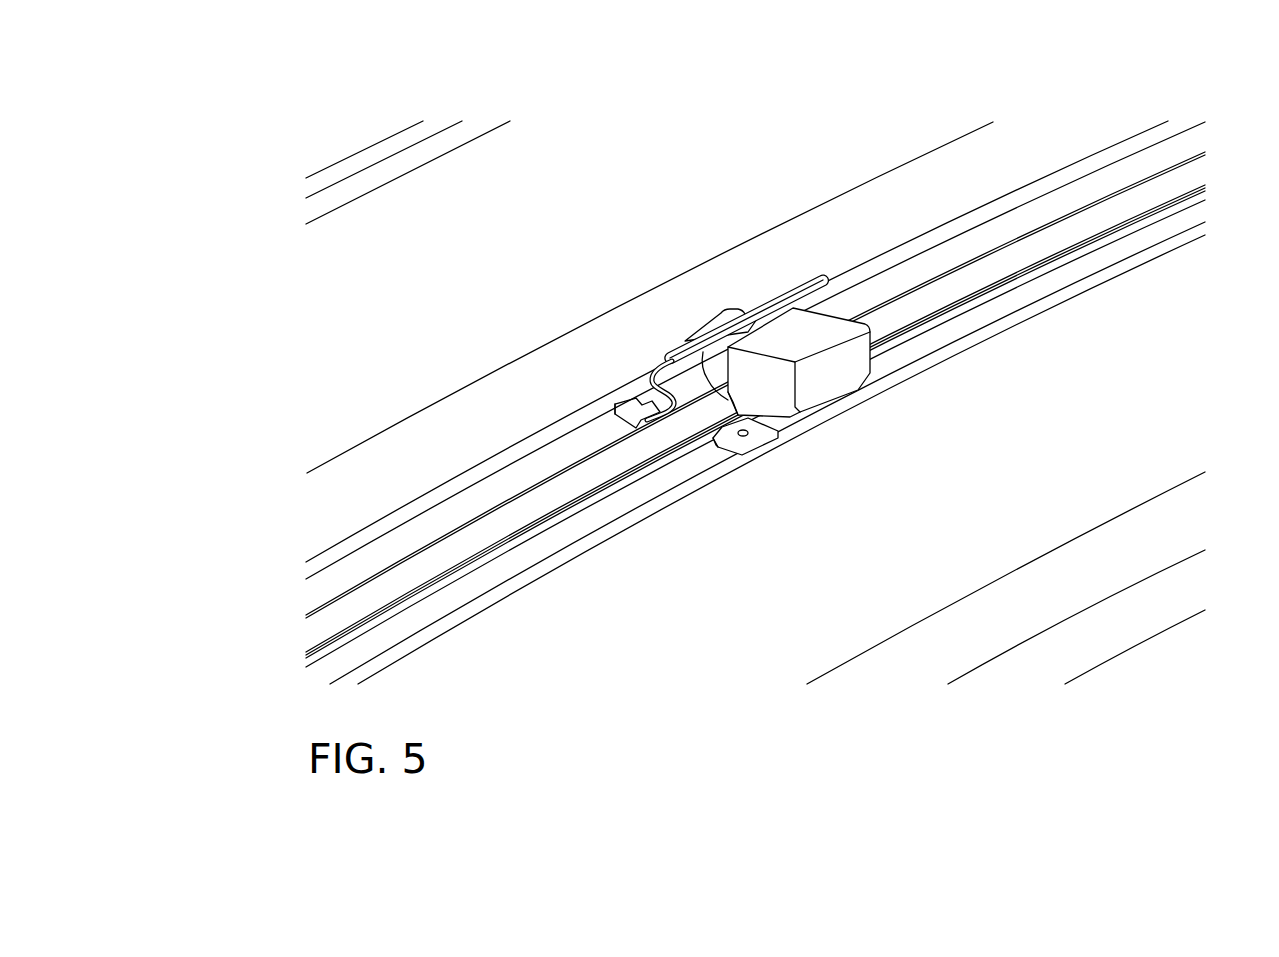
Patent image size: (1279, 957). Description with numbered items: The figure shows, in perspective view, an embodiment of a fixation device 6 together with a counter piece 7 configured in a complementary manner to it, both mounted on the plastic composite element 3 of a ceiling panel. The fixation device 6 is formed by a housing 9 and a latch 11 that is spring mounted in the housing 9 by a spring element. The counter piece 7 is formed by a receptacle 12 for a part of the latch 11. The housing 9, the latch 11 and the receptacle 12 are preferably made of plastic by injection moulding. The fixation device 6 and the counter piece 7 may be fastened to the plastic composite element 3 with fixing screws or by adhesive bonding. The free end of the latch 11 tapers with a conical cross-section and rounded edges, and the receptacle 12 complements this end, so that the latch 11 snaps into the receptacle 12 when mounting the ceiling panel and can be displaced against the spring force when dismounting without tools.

The plastic composite element 3 is at (400, 292).
The fixation device 6 is at (855, 300).
The counter piece 7 is at (725, 320).
The housing 9 is at (812, 338).
The latch 11 is at (708, 400).
The receptacle 12 is at (685, 377).